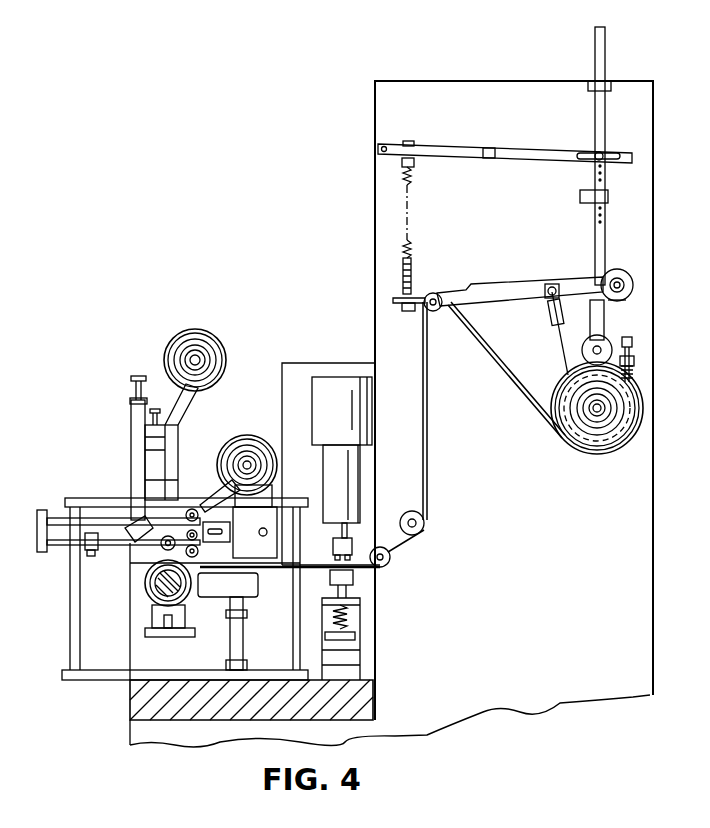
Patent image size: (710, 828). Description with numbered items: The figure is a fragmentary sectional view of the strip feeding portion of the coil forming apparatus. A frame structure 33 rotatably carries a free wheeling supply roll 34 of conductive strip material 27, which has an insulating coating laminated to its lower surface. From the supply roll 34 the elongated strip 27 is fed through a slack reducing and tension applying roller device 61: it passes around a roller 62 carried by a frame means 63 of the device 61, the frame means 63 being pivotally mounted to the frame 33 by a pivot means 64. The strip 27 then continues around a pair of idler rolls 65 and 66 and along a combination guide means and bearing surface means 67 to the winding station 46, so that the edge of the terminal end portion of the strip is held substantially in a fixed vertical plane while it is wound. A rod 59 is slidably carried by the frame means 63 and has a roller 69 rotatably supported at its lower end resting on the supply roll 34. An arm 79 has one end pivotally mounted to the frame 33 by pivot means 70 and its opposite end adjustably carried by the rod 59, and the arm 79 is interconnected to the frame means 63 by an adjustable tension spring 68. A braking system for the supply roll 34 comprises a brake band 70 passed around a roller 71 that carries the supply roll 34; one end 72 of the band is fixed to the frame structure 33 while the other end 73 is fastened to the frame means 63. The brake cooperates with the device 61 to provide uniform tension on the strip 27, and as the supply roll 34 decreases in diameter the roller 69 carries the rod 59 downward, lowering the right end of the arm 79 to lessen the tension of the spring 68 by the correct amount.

The strip material 27 is at (428, 424).
The frame structure 33 is at (644, 178).
The supply roll 34 is at (632, 410).
The winding station 46 is at (148, 598).
The rod 59 is at (604, 232).
The slack reducing and tension applying roller device 61 is at (622, 257).
The roller 62 is at (438, 312).
The frame means 63 is at (520, 262).
The pivot means 64 is at (634, 286).
The idler roll 65 is at (412, 510).
The idler roll 66 is at (392, 555).
The combination guide means and bearing surface means 67 is at (258, 563).
The adjustable tension spring 68 is at (414, 183).
The roller 69 is at (612, 340).
The brake band 70 is at (380, 150).
The roller 71 is at (612, 422).
The brake band end 72 is at (640, 360).
The brake band end 73 is at (546, 313).
The arm 79 is at (463, 150).